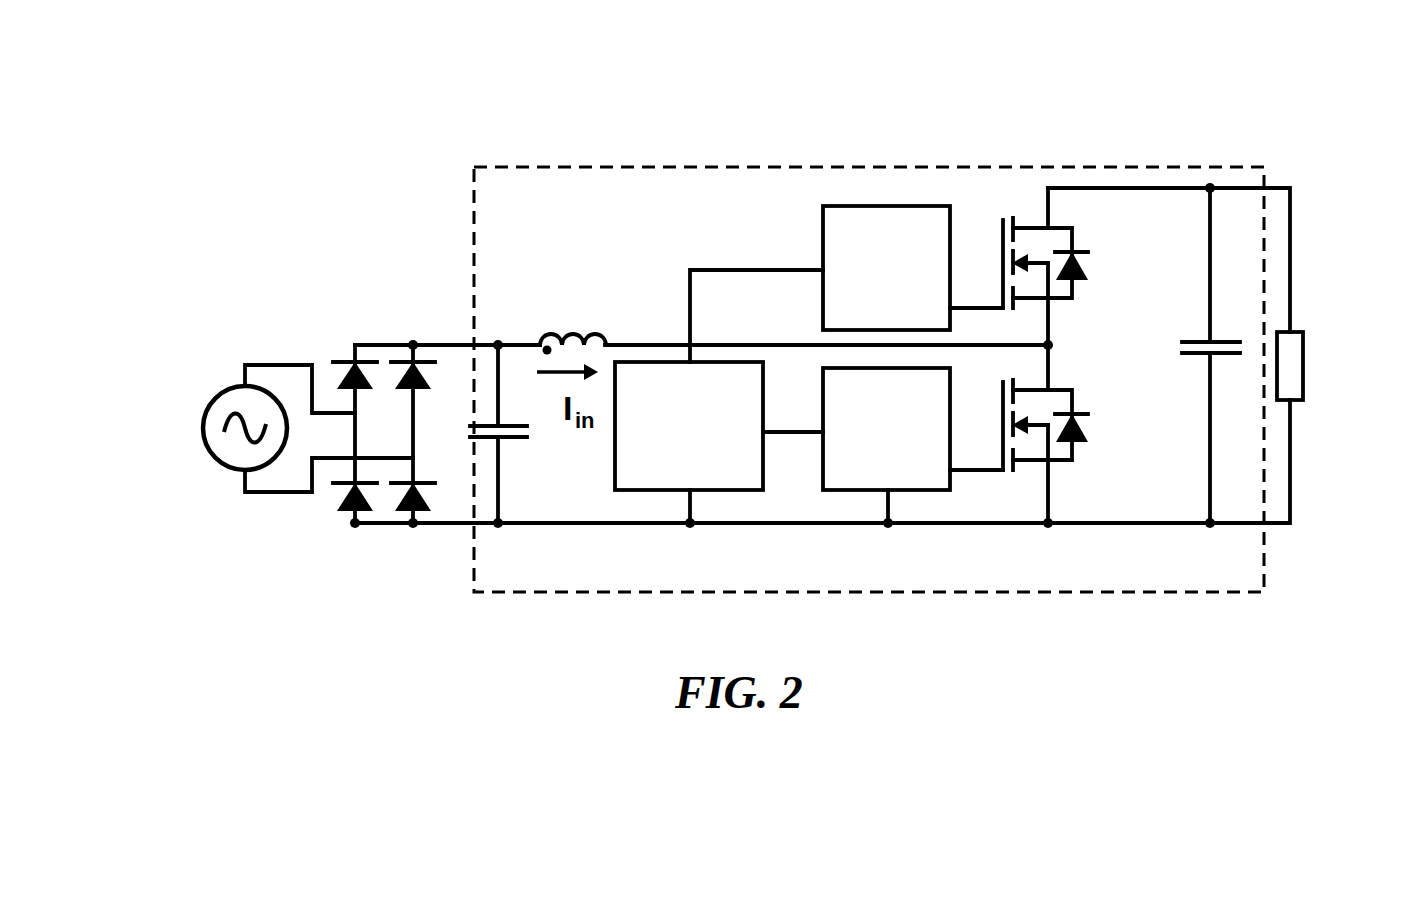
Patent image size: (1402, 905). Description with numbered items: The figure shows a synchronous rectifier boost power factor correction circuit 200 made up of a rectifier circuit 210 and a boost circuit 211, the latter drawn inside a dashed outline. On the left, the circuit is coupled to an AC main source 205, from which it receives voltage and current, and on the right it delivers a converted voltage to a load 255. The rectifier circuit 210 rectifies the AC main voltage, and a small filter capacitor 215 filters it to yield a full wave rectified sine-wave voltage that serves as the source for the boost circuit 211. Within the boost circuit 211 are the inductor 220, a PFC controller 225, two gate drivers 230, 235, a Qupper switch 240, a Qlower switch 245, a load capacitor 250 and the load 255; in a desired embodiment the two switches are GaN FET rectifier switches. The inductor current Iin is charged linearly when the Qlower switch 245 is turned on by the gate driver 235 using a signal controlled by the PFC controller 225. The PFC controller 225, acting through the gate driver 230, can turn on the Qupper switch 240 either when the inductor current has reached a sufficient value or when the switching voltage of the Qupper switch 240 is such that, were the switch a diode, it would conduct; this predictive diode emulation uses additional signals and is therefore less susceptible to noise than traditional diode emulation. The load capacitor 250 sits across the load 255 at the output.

The synchronous rectifier boost power factor correction circuit 200 is at (1175, 85).
The AC main source 205 is at (206, 410).
The rectifier circuit 210 is at (431, 445).
The boost circuit 211 is at (774, 165).
The filter capacitor 215 is at (524, 440).
The inductor 220 is at (549, 340).
The PFC controller 225 is at (719, 396).
The gate driver 230 is at (913, 268).
The gate driver 235 is at (913, 445).
The Qupper switch 240 is at (1035, 222).
The Qlower switch 245 is at (1075, 462).
The load capacitor 250 is at (1215, 336).
The load 255 is at (1300, 330).